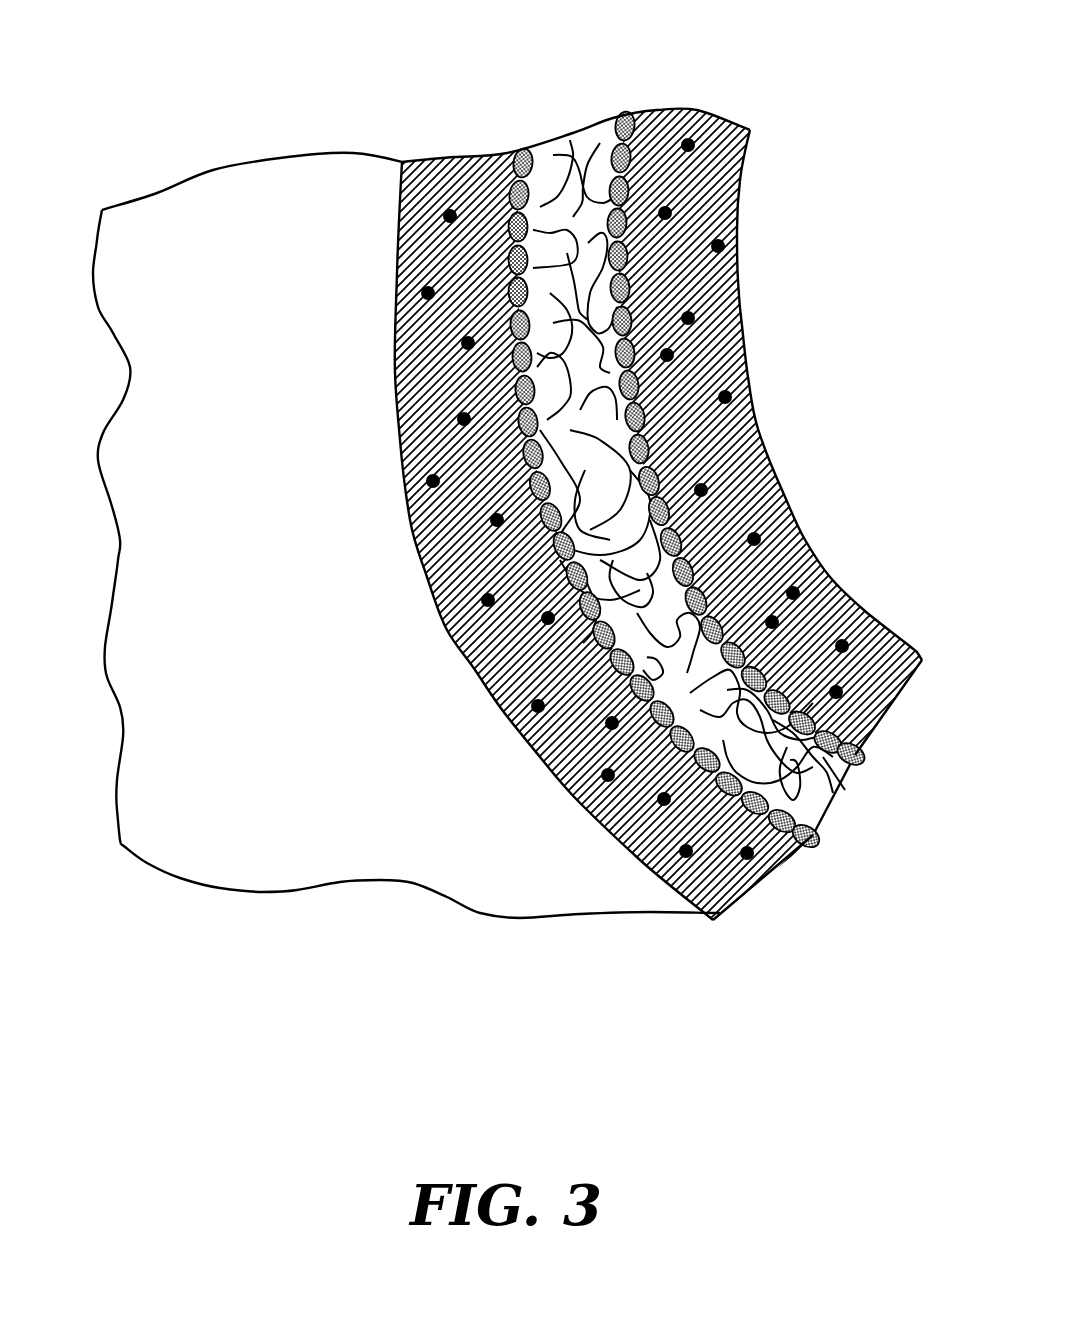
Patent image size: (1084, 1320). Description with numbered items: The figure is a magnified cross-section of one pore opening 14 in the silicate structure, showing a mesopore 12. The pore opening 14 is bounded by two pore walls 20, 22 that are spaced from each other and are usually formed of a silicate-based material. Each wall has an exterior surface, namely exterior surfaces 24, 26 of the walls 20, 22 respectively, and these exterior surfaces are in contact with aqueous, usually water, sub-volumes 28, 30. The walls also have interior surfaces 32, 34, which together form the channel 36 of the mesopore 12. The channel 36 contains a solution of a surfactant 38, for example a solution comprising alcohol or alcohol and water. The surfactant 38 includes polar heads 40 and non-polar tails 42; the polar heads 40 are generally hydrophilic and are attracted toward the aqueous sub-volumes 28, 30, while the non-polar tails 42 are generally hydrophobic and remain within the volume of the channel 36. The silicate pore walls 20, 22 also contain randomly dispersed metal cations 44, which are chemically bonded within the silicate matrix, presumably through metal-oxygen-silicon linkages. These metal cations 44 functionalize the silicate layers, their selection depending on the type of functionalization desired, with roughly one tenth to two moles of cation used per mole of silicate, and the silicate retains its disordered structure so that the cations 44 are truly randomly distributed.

The mesopore 12 is at (561, 110).
The pore opening 14 is at (813, 479).
The pore wall 20 is at (727, 157).
The pore wall 22 is at (460, 173).
The exterior surface of wall 24 is at (797, 540).
The exterior surface of wall 26 is at (397, 190).
The aqueous sub-volume 28 is at (842, 335).
The aqueous sub-volume 30 is at (296, 512).
The interior surface of wall 32 is at (817, 795).
The interior surface of wall 34 is at (837, 757).
The channel 36 is at (807, 815).
The surfactant 38 is at (590, 133).
The polar heads 40 is at (523, 165).
The non-polar tails 42 is at (598, 445).
The metal cations 44 is at (793, 592).